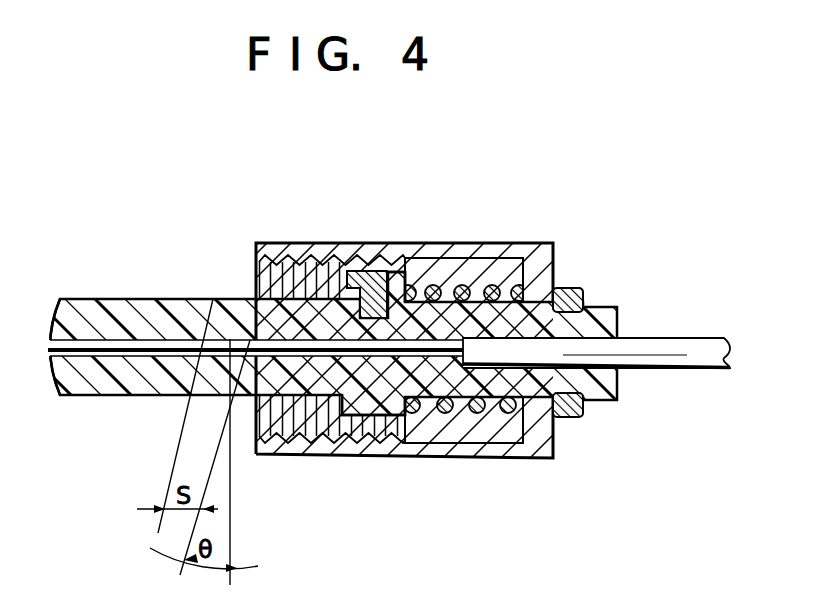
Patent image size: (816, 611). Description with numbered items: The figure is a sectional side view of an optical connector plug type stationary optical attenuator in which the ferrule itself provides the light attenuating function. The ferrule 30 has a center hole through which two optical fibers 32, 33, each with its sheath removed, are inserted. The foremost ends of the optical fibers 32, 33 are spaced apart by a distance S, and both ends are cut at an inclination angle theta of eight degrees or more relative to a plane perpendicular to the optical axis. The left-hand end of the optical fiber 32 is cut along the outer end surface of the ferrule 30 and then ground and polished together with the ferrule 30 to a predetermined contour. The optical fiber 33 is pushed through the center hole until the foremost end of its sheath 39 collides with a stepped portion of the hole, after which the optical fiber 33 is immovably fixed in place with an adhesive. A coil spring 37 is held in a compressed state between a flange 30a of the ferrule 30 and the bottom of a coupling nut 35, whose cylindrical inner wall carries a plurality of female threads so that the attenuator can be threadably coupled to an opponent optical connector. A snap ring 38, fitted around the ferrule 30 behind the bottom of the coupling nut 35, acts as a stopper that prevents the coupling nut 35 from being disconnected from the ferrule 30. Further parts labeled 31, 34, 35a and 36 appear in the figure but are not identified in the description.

The ferrule 30 is at (178, 308).
The flange 30a is at (388, 415).
The inner wire 31 is at (106, 352).
The optical fiber 32 is at (98, 344).
The optical fiber 33 is at (440, 356).
The tip end of guide pipe 34 is at (50, 362).
The coupling nut 35 is at (513, 252).
The threaded portion of housing 35a is at (291, 440).
The lock nut 36 is at (377, 271).
The coil spring 37 is at (463, 285).
The snap ring 38 is at (577, 290).
The sheath 39 is at (572, 418).